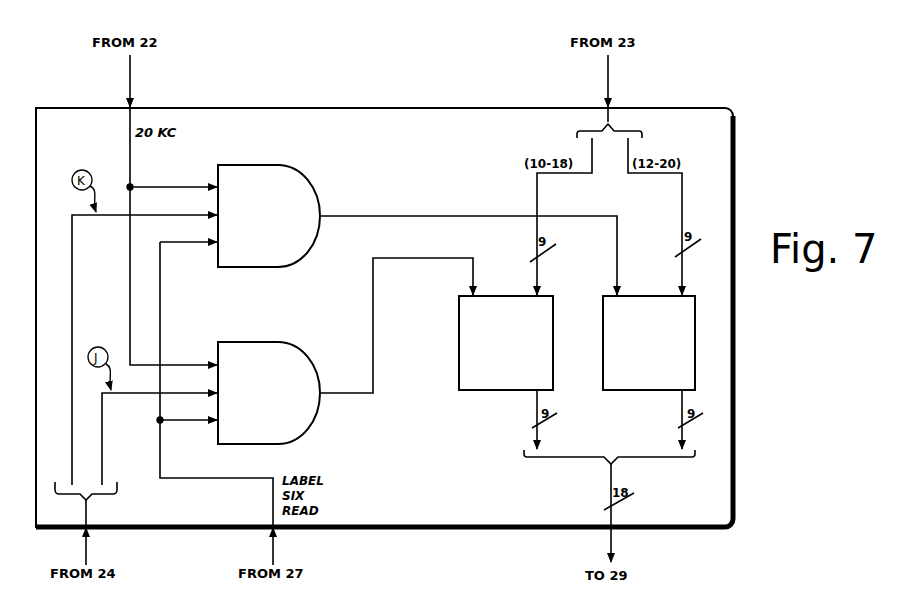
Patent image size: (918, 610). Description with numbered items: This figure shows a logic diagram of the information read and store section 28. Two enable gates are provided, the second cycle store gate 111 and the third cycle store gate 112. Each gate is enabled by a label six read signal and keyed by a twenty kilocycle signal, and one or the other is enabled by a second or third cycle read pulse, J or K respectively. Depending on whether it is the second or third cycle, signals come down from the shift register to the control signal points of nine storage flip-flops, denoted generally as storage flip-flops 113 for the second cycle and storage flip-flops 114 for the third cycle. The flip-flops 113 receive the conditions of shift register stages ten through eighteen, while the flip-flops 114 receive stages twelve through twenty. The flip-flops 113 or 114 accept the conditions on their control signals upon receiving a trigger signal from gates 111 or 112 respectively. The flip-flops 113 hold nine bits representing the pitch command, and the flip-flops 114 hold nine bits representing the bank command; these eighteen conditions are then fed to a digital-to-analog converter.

The information read and store section 28 is at (709, 107).
The second cycle store gate 111 is at (289, 345).
The third cycle store gate 112 is at (289, 168).
The storage flip-flops 113 is at (459, 309).
The storage flip-flops 114 is at (603, 309).